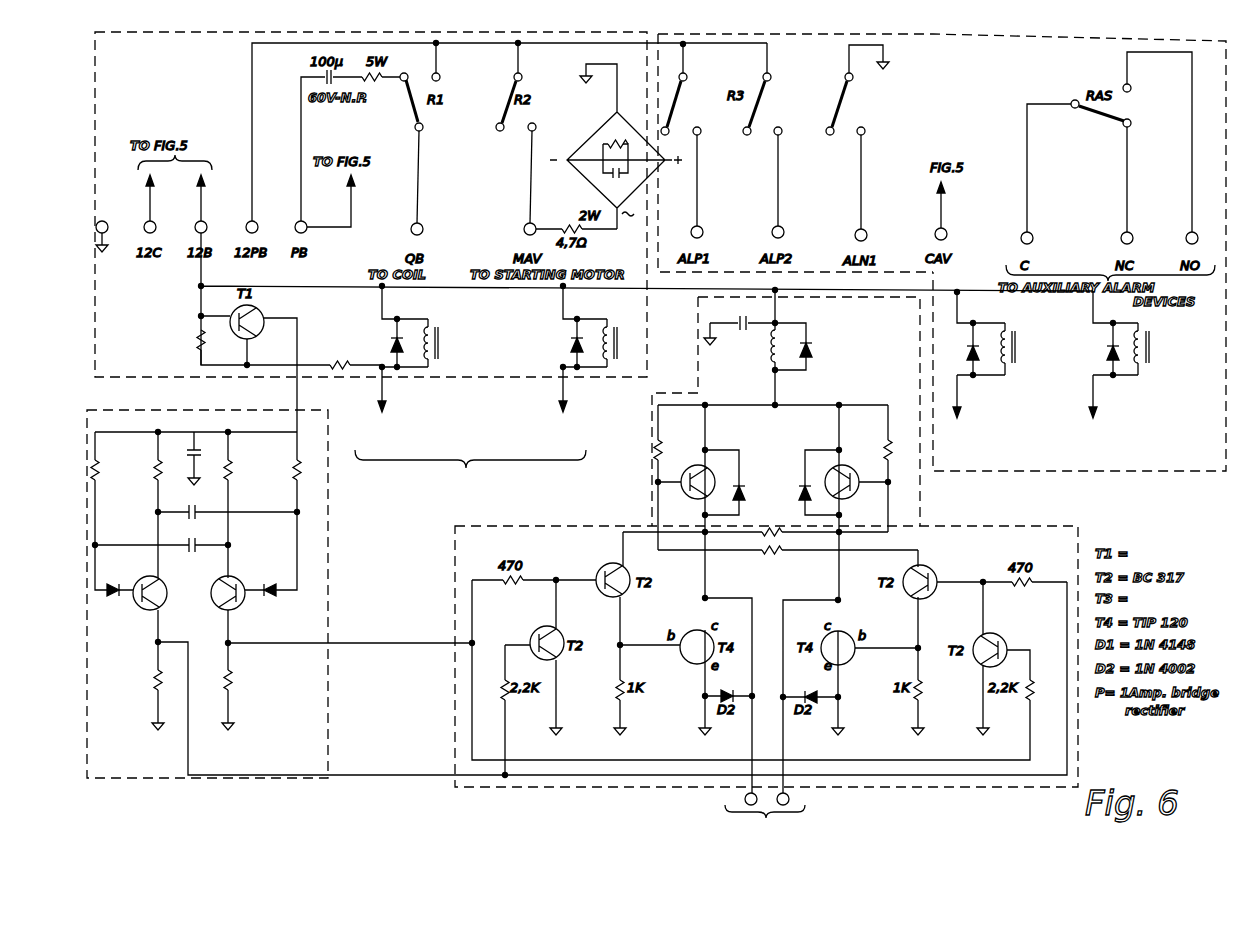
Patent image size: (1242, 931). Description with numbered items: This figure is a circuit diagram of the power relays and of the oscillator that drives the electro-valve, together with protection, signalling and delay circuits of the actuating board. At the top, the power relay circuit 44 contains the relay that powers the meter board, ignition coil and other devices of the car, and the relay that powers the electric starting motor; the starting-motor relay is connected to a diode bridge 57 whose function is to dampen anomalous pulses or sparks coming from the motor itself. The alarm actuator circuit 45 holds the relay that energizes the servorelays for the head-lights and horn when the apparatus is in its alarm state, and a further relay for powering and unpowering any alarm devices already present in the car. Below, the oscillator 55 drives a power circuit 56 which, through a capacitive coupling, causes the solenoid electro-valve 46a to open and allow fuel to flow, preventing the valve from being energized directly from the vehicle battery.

The power relay circuit 44 is at (472, 379).
The alarm actuator circuit 45 is at (1113, 474).
The oscillator 55 is at (330, 596).
The power circuit 56 is at (1005, 530).
The diode bridge 57 is at (591, 173).
The solenoid electro-valve 46a is at (714, 816).